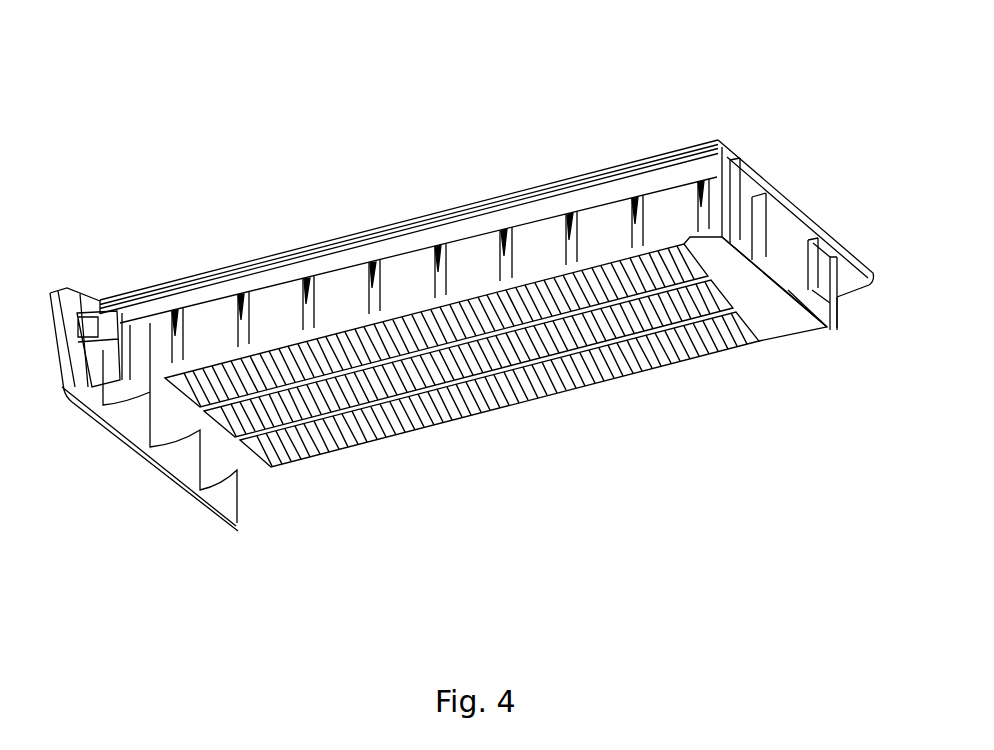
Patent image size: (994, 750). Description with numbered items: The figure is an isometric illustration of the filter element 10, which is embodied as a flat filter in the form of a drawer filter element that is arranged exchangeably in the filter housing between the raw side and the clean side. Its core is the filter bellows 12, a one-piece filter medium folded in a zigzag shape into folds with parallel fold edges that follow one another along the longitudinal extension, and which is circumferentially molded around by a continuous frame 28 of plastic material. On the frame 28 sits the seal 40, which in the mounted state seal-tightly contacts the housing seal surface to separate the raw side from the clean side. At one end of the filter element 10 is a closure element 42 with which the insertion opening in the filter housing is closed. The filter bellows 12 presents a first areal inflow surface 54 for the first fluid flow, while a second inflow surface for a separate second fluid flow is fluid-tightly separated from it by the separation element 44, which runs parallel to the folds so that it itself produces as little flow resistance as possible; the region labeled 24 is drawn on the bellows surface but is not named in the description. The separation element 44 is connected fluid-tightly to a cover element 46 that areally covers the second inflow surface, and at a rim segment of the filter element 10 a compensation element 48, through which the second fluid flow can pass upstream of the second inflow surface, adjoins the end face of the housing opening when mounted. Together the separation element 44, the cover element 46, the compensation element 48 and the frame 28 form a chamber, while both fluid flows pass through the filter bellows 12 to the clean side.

The filter element 10 is at (456, 274).
The filter bellows 12 is at (496, 384).
The hatched support surface 24 is at (495, 401).
The frame 28 is at (788, 209).
The seal 40 is at (160, 289).
The closure element 42 is at (85, 300).
The separation element 44 is at (733, 319).
The cover element 46 is at (772, 305).
The compensation element 48 is at (790, 254).
The first areal inflow surface 54 is at (374, 421).